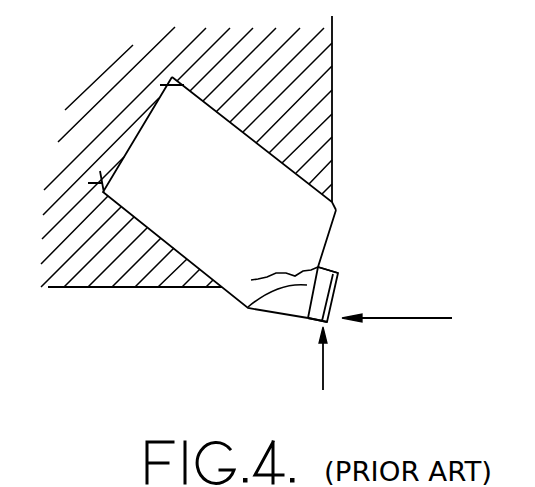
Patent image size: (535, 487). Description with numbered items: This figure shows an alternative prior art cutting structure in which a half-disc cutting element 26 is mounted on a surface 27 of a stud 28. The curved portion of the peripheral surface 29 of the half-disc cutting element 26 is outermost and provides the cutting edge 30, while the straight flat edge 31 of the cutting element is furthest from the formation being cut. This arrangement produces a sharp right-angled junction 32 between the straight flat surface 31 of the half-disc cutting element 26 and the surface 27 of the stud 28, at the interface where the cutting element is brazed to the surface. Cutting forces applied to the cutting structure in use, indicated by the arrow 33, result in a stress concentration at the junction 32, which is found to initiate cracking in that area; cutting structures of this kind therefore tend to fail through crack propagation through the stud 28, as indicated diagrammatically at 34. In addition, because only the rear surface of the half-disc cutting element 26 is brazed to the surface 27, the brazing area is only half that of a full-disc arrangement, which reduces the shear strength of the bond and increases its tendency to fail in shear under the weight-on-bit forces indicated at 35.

The half-disc cutting element 26 is at (355, 276).
The surface of the stud 27 is at (333, 225).
The stud 28 is at (277, 195).
The peripheral surface 29 is at (317, 322).
The cutting edge 30 is at (324, 323).
The straight flat edge 31 is at (330, 268).
The right-angled junction 32 is at (318, 267).
The arrow indicating cutting forces 33 is at (413, 318).
The crack propagation 34 is at (258, 277).
The weight-on-bit forces 35 is at (323, 368).